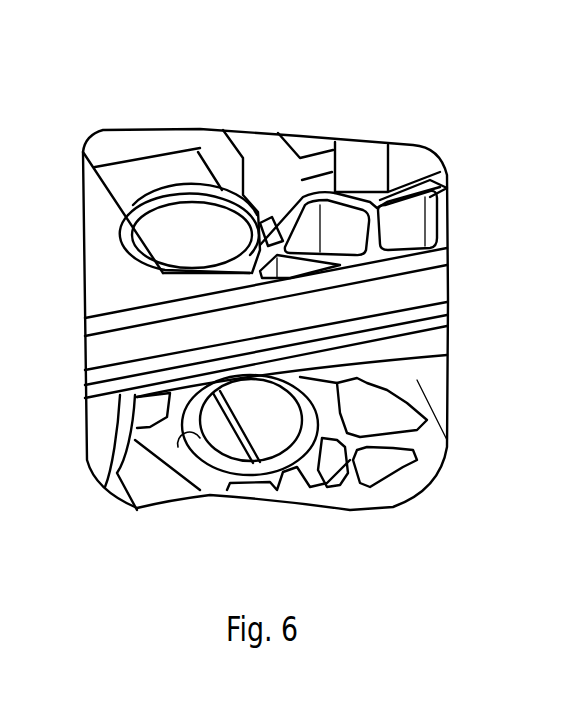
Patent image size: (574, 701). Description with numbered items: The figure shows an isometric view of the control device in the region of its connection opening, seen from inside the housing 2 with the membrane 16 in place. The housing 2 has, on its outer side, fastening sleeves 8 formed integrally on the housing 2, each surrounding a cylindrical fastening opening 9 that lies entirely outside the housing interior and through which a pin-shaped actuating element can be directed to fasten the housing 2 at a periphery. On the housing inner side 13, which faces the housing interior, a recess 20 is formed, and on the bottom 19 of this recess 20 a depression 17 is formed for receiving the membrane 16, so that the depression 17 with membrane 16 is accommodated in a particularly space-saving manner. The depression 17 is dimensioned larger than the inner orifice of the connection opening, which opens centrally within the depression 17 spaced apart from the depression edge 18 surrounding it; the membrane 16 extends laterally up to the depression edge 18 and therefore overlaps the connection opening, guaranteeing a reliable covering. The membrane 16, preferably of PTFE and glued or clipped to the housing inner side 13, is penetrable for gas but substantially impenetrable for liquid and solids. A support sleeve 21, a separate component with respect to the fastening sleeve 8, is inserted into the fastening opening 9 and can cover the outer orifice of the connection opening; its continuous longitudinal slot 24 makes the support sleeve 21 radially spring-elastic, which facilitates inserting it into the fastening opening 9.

The housing 2 is at (270, 138).
The fastening sleeve 8 is at (300, 488).
The fastening opening 9 is at (180, 440).
The housing inner side 13 is at (97, 222).
The membrane 16 is at (187, 237).
The depression 17 is at (217, 193).
The depression edge 18 is at (172, 193).
The bottom 19 is at (123, 170).
The recess 20 is at (148, 128).
The support sleeve 21 is at (200, 475).
The longitudinal slot 24 is at (258, 462).